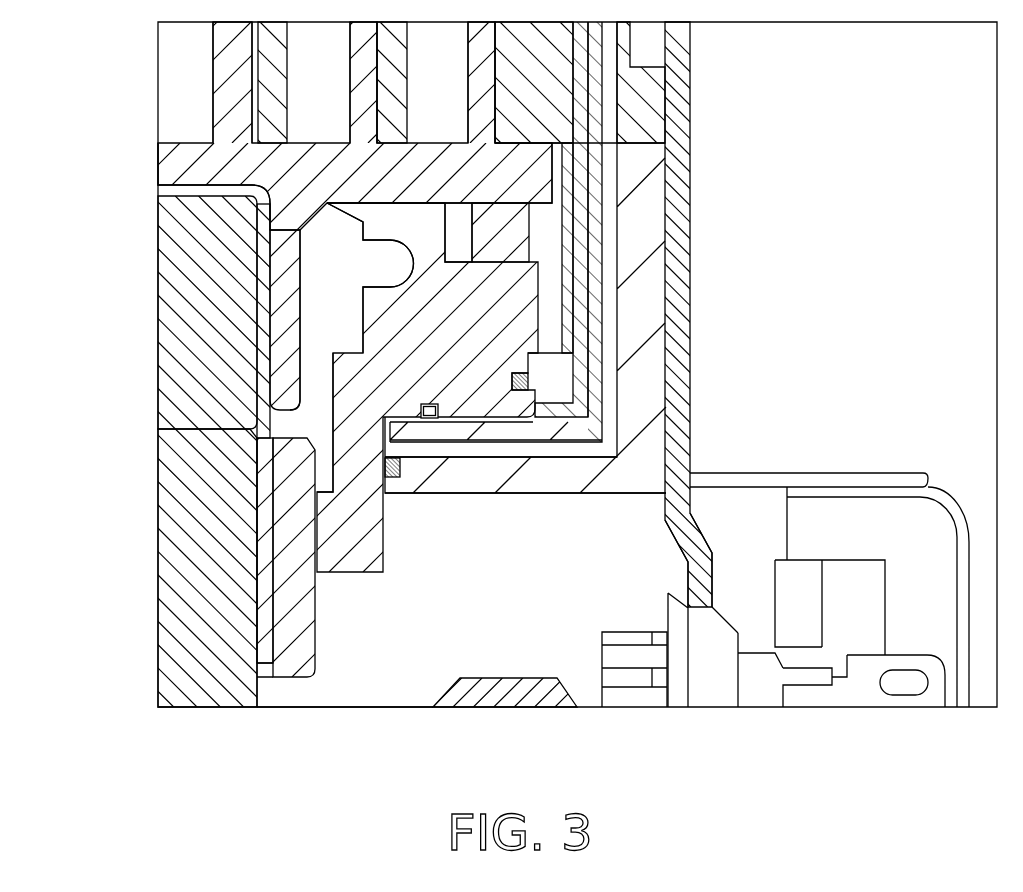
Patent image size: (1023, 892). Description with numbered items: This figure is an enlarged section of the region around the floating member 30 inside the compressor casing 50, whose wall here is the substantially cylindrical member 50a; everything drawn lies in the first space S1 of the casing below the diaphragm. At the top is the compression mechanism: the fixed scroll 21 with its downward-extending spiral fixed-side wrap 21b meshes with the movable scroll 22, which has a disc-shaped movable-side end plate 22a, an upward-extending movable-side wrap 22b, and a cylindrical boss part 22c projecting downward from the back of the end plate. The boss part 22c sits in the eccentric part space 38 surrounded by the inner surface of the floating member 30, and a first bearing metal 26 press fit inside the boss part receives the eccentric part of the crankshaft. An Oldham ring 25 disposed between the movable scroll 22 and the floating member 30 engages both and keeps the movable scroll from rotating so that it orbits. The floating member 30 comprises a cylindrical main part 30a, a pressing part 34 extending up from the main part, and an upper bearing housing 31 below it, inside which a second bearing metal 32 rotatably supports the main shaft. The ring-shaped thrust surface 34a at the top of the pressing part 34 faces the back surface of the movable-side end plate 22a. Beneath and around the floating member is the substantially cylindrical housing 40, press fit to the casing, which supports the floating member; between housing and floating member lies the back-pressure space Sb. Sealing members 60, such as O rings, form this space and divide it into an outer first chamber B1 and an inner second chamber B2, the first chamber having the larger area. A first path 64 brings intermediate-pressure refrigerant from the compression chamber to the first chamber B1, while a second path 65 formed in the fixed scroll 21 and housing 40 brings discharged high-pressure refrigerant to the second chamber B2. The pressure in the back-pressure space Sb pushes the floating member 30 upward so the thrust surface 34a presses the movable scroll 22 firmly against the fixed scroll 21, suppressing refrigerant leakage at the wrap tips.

The fixed scroll 21 is at (642, 57).
The fixed-side wrap 21b is at (268, 82).
The movable scroll 22 is at (155, 156).
The movable-side end plate 22a is at (160, 186).
The movable-side wrap 22b is at (222, 112).
The boss part 22c is at (283, 337).
The Oldham ring 25 is at (463, 229).
The first bearing metal 26 is at (268, 367).
The floating member 30 is at (367, 592).
The main part 30a is at (531, 280).
The upper bearing housing 31 is at (318, 651).
The second bearing metal 32 is at (265, 664).
The pressing part 34 is at (386, 226).
The thrust surface 34a is at (425, 194).
The eccentric part space 38 is at (317, 391).
The housing 40 is at (594, 503).
The casing 50 is at (702, 90).
The cylindrical member 50a is at (685, 422).
The sealing member 60 is at (531, 381).
The first path 64 is at (597, 277).
The second path 65 is at (627, 318).
The first chamber B1 is at (460, 422).
The second chamber B2 is at (410, 422).
The first space S1 is at (485, 665).
The back-pressure space Sb is at (455, 567).